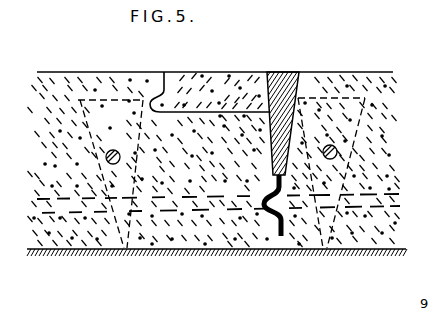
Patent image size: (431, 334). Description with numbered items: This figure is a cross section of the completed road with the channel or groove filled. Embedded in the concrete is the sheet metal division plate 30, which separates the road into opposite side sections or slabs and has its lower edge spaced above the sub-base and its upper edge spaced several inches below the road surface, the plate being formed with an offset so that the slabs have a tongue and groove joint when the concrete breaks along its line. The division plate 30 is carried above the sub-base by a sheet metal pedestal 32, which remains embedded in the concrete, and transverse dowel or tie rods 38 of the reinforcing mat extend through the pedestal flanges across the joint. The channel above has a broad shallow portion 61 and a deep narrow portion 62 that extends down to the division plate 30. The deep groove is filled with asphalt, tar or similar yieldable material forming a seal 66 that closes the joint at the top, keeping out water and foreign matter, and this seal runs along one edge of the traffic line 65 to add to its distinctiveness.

The broad shallow portion 61 is at (173, 110).
The traffic line 65 is at (213, 72).
The seal 66 is at (280, 93).
The deep narrow portion 62 is at (293, 100).
The division plate 30 is at (275, 249).
The transverse dowel or tie rods 38 is at (378, 194).
The pedestal 32 is at (127, 233).